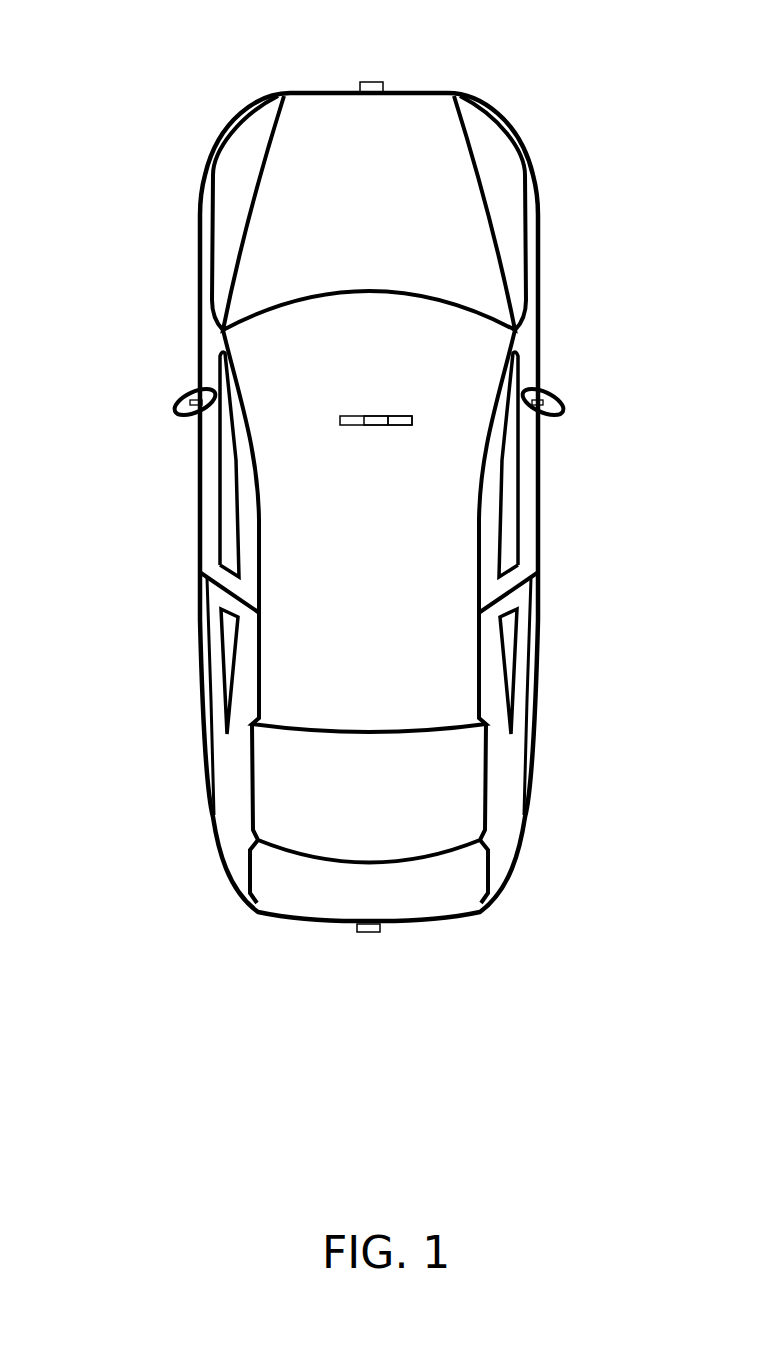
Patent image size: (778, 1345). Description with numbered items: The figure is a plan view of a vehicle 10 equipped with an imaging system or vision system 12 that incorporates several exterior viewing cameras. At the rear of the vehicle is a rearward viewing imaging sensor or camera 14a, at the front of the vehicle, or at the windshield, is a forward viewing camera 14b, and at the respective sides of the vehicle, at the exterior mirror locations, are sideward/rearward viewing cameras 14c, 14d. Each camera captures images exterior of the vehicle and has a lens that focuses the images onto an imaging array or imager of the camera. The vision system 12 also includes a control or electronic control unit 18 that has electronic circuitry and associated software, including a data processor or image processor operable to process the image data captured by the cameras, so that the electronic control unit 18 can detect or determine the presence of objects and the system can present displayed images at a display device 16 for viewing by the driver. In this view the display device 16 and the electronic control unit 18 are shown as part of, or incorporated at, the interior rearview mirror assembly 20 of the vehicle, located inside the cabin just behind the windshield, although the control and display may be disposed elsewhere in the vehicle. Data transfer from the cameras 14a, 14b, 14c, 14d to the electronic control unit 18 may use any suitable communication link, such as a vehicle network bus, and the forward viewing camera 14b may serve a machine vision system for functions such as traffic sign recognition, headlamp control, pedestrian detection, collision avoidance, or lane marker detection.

The vehicle 10 is at (133, 99).
The vision system 12 is at (329, 941).
The rearward viewing camera 14a is at (372, 932).
The forward viewing camera 14b is at (375, 82).
The sideward/rearward viewing camera 14c is at (182, 397).
The sideward/rearward viewing camera 14d is at (553, 395).
The display device 16 is at (352, 413).
The electronic control unit 18 is at (372, 413).
The interior rearview mirror assembly 20 is at (413, 415).